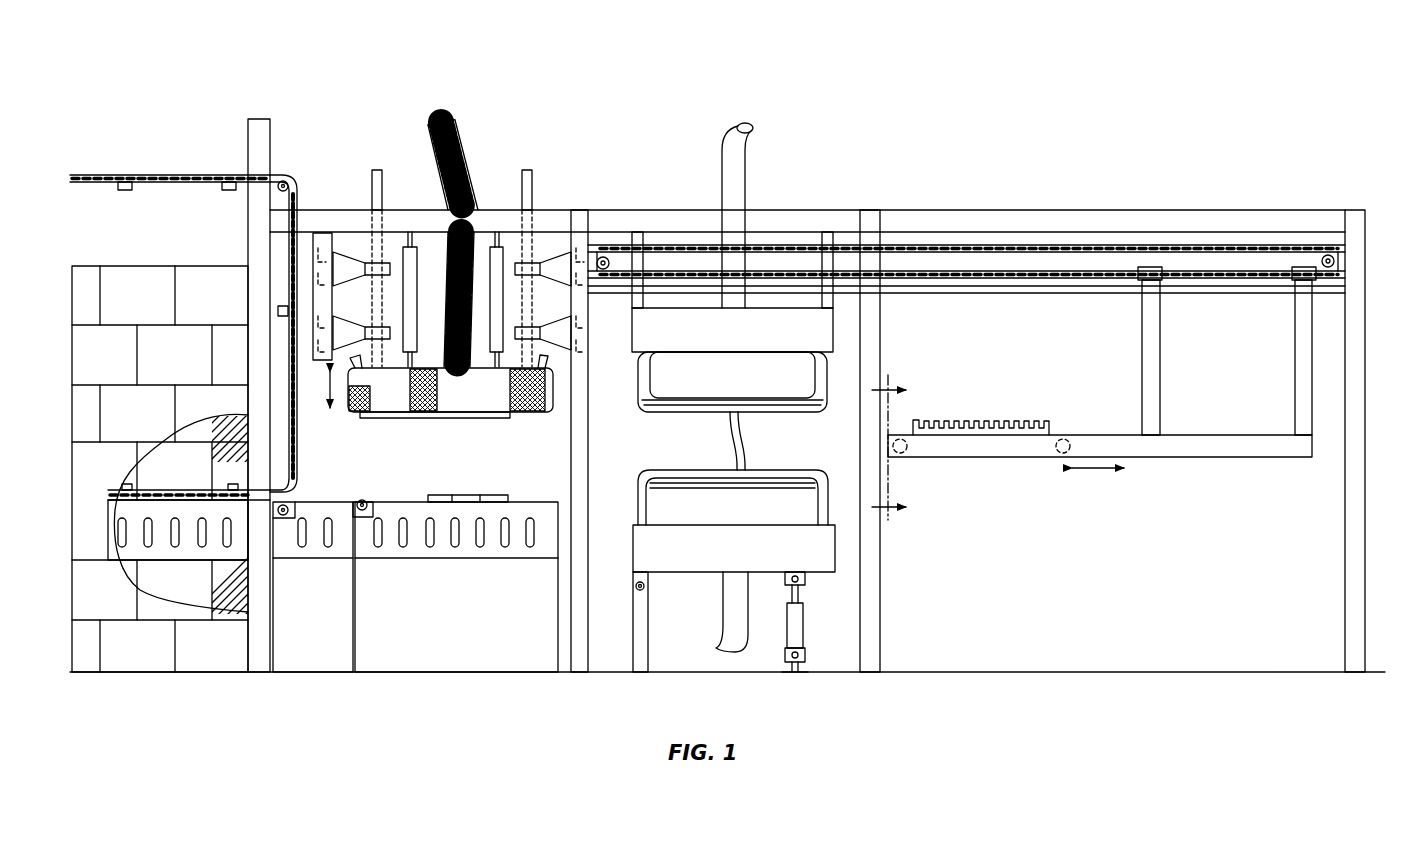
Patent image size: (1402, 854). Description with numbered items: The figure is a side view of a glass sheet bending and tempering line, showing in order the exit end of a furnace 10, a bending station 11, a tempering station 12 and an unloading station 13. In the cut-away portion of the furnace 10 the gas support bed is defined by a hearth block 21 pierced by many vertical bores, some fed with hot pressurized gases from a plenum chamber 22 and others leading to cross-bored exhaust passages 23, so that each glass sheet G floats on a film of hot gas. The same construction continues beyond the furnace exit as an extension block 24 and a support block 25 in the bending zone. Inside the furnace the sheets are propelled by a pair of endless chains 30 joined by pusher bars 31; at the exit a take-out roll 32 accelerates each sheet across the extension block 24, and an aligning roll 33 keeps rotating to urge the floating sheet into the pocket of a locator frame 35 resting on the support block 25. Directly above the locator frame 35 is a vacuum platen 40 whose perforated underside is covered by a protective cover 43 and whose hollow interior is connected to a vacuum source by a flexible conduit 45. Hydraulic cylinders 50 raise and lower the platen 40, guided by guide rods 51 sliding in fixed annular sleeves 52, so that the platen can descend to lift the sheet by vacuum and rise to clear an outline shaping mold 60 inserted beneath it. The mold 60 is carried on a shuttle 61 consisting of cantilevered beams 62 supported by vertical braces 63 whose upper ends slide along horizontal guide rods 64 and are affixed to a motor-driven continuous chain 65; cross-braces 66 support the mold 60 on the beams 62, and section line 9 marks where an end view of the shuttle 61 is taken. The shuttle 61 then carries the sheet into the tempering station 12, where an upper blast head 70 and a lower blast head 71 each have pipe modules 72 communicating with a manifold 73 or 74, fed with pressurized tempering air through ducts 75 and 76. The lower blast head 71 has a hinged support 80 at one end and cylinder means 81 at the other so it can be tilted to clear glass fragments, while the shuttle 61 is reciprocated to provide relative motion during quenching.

The furnace 10 is at (155, 113).
The bending station 11 is at (430, 93).
The tempering station 12 is at (740, 103).
The unloading station 13 is at (1153, 150).
The section line 9 is at (896, 447).
The hearth block 21 is at (217, 495).
The plenum chamber 22 is at (162, 584).
The exhaust passages 23 is at (460, 568).
The extension block 24 is at (323, 565).
The support block 25 is at (527, 495).
The endless chains 30 is at (192, 490).
The pusher bars 31 is at (181, 495).
The take-out roll 32 is at (290, 505).
The aligning roll 33 is at (362, 498).
The locator frame 35 is at (440, 495).
The vacuum platen 40 is at (455, 405).
The protective cover 43 is at (542, 412).
The flexible conduit 45 is at (468, 165).
The hydraulic cylinders 50 is at (410, 273).
The guide rods 51 is at (372, 303).
The annular sleeves 52 is at (372, 265).
The outline shaping mold 60 is at (1056, 424).
The shuttle 61 is at (1102, 386).
The cantilevered beams 62 is at (972, 460).
The vertical braces 63 is at (1295, 368).
The horizontal guide rods 64 is at (965, 294).
The continuous chain 65 is at (1267, 243).
The cross-braces 66 is at (1072, 446).
The upper blast head 70 is at (714, 335).
The lower blast head 71 is at (722, 561).
The pipe modules 72 is at (746, 450).
The upper manifold 73 is at (746, 360).
The lower manifold 74 is at (750, 525).
The duct 75 is at (748, 168).
The duct 76 is at (725, 615).
The hinged support 80 is at (648, 588).
The cylinder means 81 is at (803, 625).
The glass sheet G is at (400, 420).